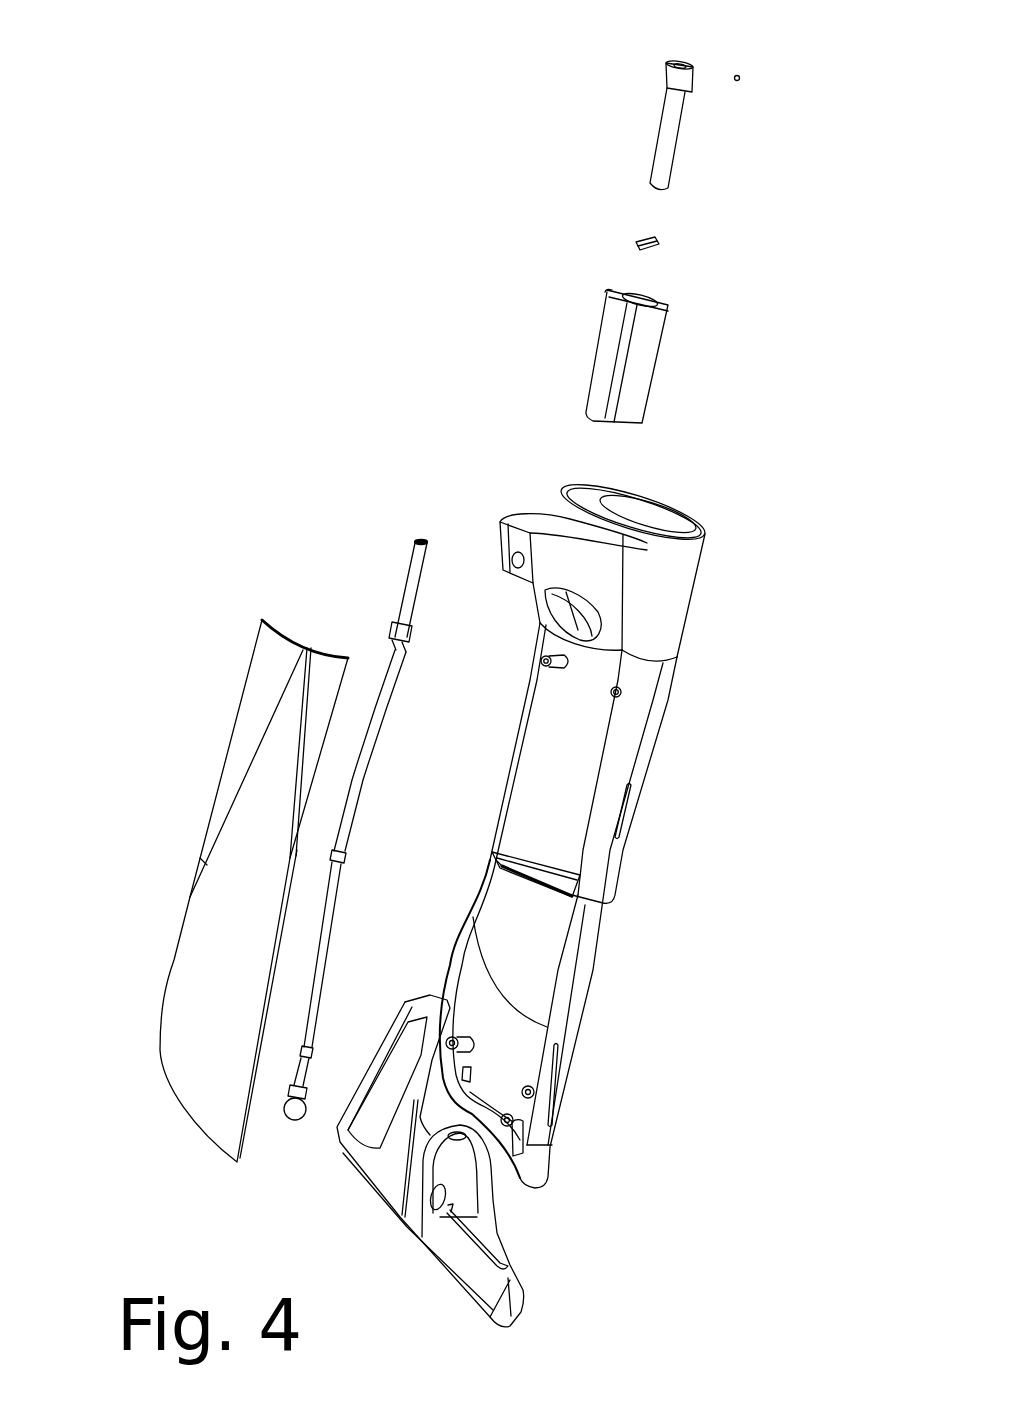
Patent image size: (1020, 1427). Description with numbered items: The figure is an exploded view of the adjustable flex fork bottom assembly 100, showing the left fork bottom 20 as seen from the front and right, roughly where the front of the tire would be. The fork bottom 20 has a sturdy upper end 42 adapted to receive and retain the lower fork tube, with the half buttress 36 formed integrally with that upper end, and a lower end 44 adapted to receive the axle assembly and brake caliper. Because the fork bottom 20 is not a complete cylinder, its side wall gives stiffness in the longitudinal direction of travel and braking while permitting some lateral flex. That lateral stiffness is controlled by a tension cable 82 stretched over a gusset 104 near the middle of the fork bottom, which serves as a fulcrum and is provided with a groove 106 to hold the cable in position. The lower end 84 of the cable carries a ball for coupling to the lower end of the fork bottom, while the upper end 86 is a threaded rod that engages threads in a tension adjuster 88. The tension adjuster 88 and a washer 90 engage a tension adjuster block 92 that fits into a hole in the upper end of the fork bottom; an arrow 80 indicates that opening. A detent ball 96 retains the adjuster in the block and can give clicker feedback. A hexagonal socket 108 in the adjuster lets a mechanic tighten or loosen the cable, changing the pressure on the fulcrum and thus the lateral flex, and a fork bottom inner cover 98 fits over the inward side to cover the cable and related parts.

The fork bottom 20 is at (632, 745).
The half buttress 36 is at (543, 522).
The sturdy upper end 42 is at (680, 590).
The lower end 44 is at (533, 1217).
The bore 80 is at (658, 511).
The tension cable 82 is at (370, 750).
The lower end of the tension cable 84 is at (293, 1121).
The upper end of the tension cable 86 is at (415, 555).
The tension adjuster 88 is at (667, 133).
The washer 90 is at (660, 242).
The tension adjuster block 92 is at (638, 367).
The detent ball 96 is at (740, 80).
The fork bottom inner cover 98 is at (197, 987).
The adjustable flex fork bottom assembly 100 is at (208, 1183).
The gusset 104 is at (552, 873).
The groove 106 is at (492, 835).
The hexagonal socket 108 is at (687, 64).